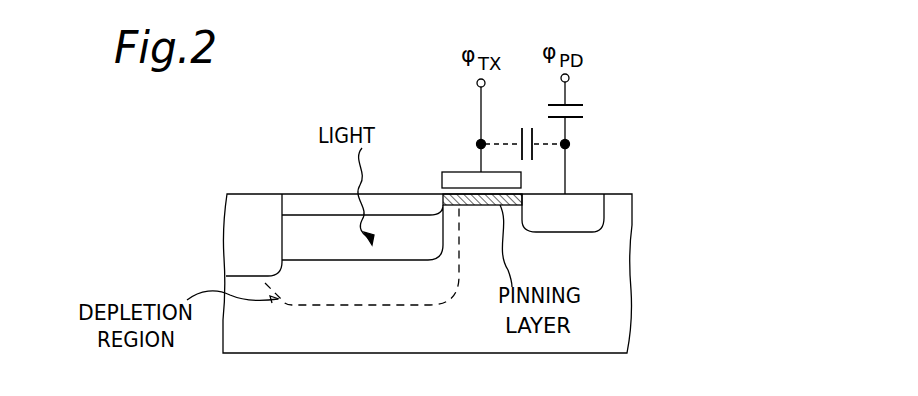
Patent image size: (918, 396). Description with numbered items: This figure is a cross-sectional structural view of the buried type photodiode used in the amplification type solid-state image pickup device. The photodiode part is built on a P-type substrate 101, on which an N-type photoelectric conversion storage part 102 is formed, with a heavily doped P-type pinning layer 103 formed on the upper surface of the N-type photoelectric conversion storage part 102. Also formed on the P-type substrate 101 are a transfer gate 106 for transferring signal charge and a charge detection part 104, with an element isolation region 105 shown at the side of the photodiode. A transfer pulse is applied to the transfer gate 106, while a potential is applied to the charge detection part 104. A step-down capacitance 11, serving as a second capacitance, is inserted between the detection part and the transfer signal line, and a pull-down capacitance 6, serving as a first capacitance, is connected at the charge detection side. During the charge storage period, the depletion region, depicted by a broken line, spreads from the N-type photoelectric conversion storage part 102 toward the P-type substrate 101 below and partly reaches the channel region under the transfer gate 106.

The P-type substrate 101 is at (427, 273).
The N-type photoelectric conversion storage part 102 is at (362, 232).
The heavily doped P-type pinning layer 103 is at (402, 205).
The charge detection part 104 is at (588, 210).
The element isolation region 105 is at (243, 205).
The transfer gate 106 is at (450, 177).
The step-down capacitance 11 is at (522, 129).
The pull-down capacitance 6 is at (575, 103).